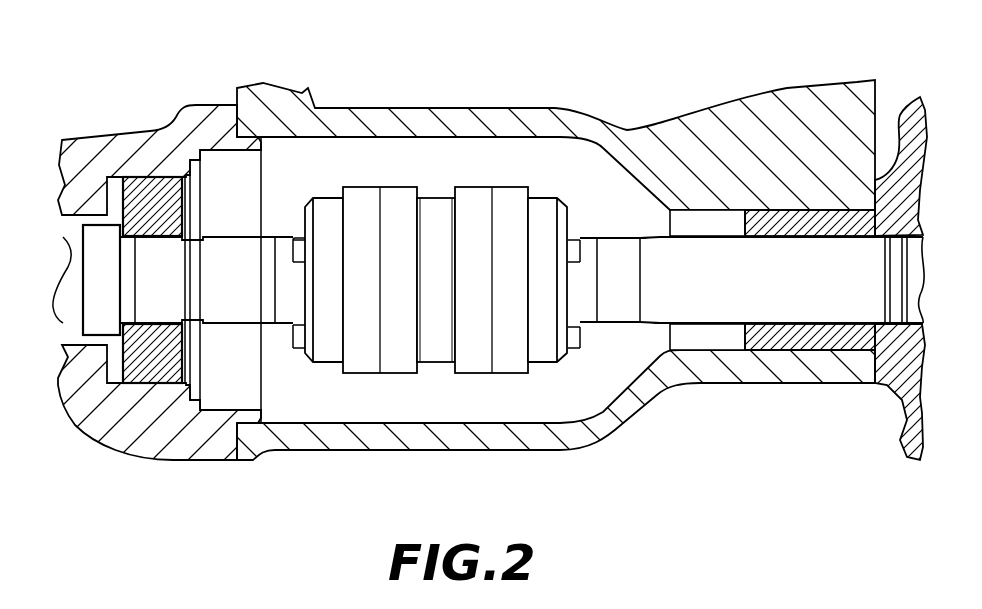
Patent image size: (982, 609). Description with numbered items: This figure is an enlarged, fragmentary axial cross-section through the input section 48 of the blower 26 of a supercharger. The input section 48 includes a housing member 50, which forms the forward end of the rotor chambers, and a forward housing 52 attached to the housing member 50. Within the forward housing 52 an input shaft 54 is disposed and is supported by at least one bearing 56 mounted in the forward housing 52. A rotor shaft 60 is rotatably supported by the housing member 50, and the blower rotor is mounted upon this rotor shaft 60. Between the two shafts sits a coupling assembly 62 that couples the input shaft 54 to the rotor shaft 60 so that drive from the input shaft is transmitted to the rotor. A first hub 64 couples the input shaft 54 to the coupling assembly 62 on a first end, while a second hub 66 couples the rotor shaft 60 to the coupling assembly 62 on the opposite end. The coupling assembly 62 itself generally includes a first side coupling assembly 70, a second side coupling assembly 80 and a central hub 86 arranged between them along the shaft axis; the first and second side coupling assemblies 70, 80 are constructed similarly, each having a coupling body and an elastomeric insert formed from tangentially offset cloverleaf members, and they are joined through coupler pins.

The blower 26 is at (831, 53).
The input section 48 is at (153, 90).
The housing member 50 is at (121, 148).
The forward housing 52 is at (686, 157).
The input shaft 54 is at (702, 276).
The bearing 56 is at (810, 336).
The rotor shaft 60 is at (108, 280).
The coupling assembly 62 is at (459, 206).
The first hub 64 is at (548, 197).
The second hub 66 is at (318, 197).
The first side coupling assembly 70 is at (497, 180).
The second side coupling assembly 80 is at (378, 179).
The central hub 86 is at (434, 190).